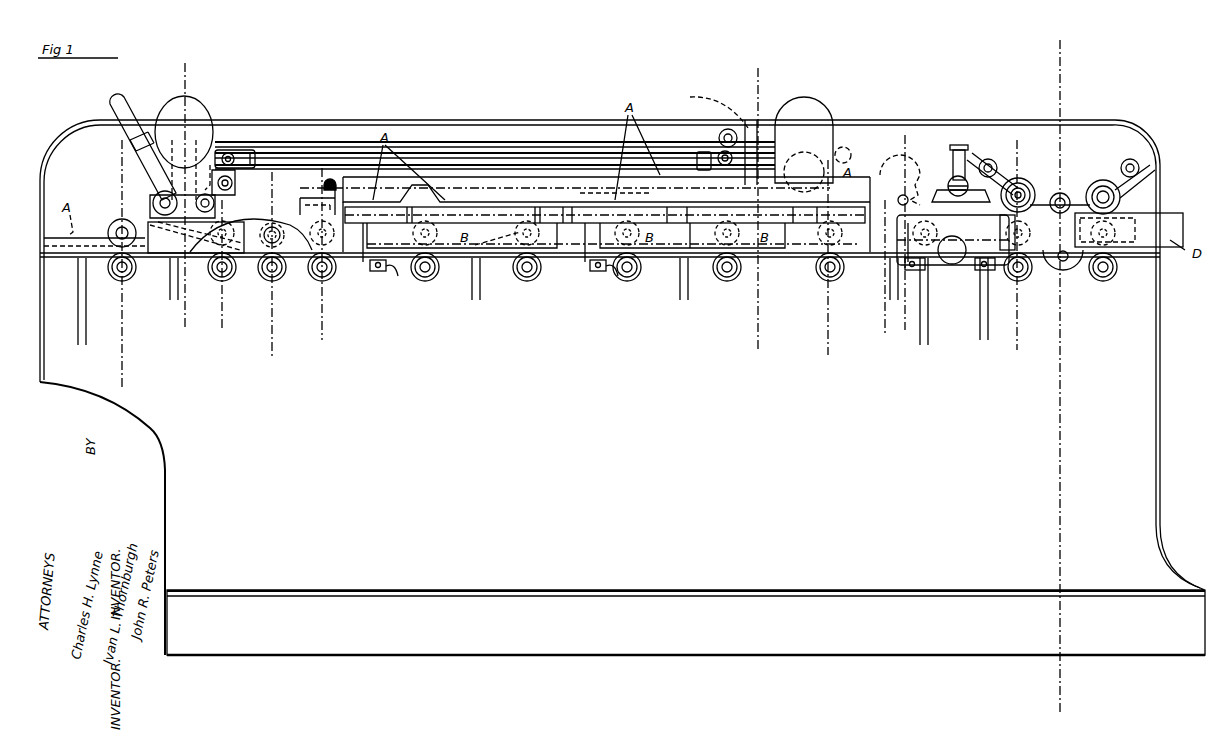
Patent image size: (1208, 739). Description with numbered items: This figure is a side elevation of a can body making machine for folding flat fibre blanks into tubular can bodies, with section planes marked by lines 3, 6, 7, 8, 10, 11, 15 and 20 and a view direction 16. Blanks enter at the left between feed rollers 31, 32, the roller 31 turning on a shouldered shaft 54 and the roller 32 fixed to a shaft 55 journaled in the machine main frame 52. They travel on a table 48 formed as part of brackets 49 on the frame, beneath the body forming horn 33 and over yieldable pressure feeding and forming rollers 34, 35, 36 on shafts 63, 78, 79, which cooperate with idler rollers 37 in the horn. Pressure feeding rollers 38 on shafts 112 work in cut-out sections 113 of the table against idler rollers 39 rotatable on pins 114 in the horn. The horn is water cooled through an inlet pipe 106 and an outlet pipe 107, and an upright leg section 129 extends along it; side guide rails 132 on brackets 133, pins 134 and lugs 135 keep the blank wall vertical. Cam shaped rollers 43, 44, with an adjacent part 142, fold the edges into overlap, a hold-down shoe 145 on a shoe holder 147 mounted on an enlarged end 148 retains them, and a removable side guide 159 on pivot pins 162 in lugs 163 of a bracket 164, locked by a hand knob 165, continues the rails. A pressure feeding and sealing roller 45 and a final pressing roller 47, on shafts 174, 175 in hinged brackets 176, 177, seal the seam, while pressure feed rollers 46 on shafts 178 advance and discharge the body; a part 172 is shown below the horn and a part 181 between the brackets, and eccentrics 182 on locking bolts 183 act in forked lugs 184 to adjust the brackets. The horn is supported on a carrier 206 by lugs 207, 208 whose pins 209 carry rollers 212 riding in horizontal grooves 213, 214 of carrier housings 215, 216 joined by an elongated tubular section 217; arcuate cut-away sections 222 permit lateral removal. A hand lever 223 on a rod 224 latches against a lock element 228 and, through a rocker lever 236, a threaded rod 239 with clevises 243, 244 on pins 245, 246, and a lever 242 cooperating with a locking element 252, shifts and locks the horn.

The section line 3 is at (200, 73).
The section line 6 is at (132, 172).
The section line 7 is at (282, 196).
The section line 8 is at (320, 178).
The section line 10 is at (770, 80).
The section line 11 is at (892, 145).
The section line 15 is at (945, 150).
The view direction 16 is at (915, 178).
The section line 20 is at (1066, 60).
The feed roller 31 is at (112, 226).
The pressure feed roller 32 is at (112, 278).
The body forming horn 33 is at (160, 245).
The pressure feeding and forming roller 34 is at (226, 280).
The pressure feeding and forming roller 35 is at (275, 280).
The pressure feeding and forming roller 36 is at (325, 280).
The idler roller 37 is at (196, 240).
The pressure feeding roller 38 is at (430, 278).
The idler roller 39 is at (438, 240).
The cam shaped roller 43 is at (886, 183).
The cam shaped roller 44 is at (886, 195).
The pressure feeding and sealing roller 45 is at (1025, 180).
The pressure feed roller 46 is at (1022, 272).
The final pressing roller 47 is at (1125, 160).
The table 48 is at (65, 240).
The bracket 49 is at (78, 298).
The machine main frame 52 is at (663, 442).
The shouldered shaft 54 is at (118, 220).
The shaft 55 is at (125, 280).
The shaft 63 is at (212, 280).
The shaft 78 is at (268, 282).
The shaft 79 is at (318, 282).
The inlet pipe 106 is at (310, 205).
The outlet pipe 107 is at (290, 200).
The shaft 112 is at (422, 280).
The cut-out section 113 is at (741, 262).
The pin 114 is at (500, 240).
The upright leg section 129 is at (560, 185).
The side guide rail 132 is at (478, 223).
The bracket 133 is at (363, 262).
The pin 134 is at (605, 272).
The lug 135 is at (378, 272).
The cam 142 is at (905, 180).
The hold-down shoe 145 is at (952, 250).
The shoe holder 147 is at (940, 150).
The enlarged end 148 is at (960, 146).
The removable side guide 159 is at (985, 262).
The pivot pin 162 is at (905, 262).
The lug 163 is at (910, 270).
The bracket 164 is at (980, 322).
The hand knob 165 is at (990, 272).
The roller 172 is at (1068, 280).
The shaft 174 is at (1028, 190).
The shaft 175 is at (1120, 203).
The hinged bracket 176 is at (1062, 192).
The hinged bracket 177 is at (1098, 180).
The shaft 178 is at (1020, 282).
The pivot 181 is at (1070, 190).
The eccentric 182 is at (1008, 160).
The locking bolt 183 is at (1128, 158).
The forked lug 184 is at (1150, 160).
The carrier 206 is at (325, 141).
The lug 207 is at (251, 235).
The lug 208 is at (765, 140).
The pin 209 is at (838, 156).
The roller 212 is at (196, 174).
The horizontal groove 213 is at (178, 166).
The horizontal groove 214 is at (804, 162).
The carrier housing 215 is at (200, 105).
The carrier housing 216 is at (805, 105).
The elongated tubular section 217 is at (475, 152).
The arcuate cut-away section 222 is at (355, 242).
The hand lever 223 is at (118, 104).
The rod 224 is at (134, 146).
The lock element 228 is at (153, 203).
The rocker lever 236 is at (233, 183).
The threaded rod 239 is at (480, 164).
The lever 242 is at (733, 130).
The clevis 243 is at (235, 155).
The clevis 244 is at (705, 150).
The pin 245 is at (220, 149).
The pin 246 is at (718, 160).
The locking element 252 is at (705, 109).